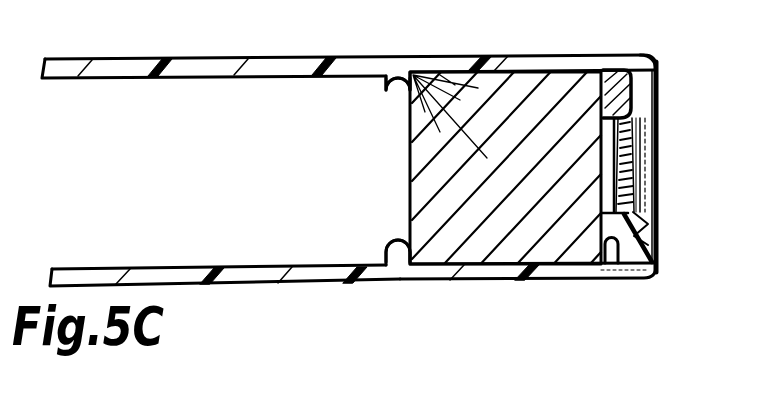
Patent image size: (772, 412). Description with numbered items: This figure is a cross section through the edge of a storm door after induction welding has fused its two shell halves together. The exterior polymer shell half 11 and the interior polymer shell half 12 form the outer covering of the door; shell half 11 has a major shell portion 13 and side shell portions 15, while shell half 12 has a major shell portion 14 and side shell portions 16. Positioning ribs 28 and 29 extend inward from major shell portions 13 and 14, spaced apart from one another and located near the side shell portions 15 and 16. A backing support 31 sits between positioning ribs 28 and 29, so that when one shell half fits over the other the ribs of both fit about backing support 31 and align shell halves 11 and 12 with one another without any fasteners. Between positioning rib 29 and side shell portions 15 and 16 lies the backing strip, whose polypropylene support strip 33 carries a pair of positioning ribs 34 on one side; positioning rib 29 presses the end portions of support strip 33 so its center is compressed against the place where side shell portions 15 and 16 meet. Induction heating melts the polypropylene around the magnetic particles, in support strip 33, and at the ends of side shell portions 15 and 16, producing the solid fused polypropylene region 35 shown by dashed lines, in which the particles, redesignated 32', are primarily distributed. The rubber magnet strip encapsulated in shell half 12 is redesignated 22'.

The exterior polymer material shell half 11 is at (167, 58).
The interior polymer material shell half 12 is at (250, 287).
The major shell portion 13 is at (447, 56).
The major shell portion 14 is at (490, 281).
The side shell portions 15 is at (659, 84).
The side shell portions 16 is at (652, 224).
The encapsulated rubber magnet strip 22' is at (663, 264).
The positioning rib 28 is at (396, 100).
The positioning rib 29 is at (604, 77).
The backing support 31 is at (409, 165).
The magnetic particles after fusion 32' is at (657, 165).
The support strip 33 is at (657, 62).
The positioning ribs 34 is at (578, 113).
The fused polypropylene region 35 is at (648, 130).